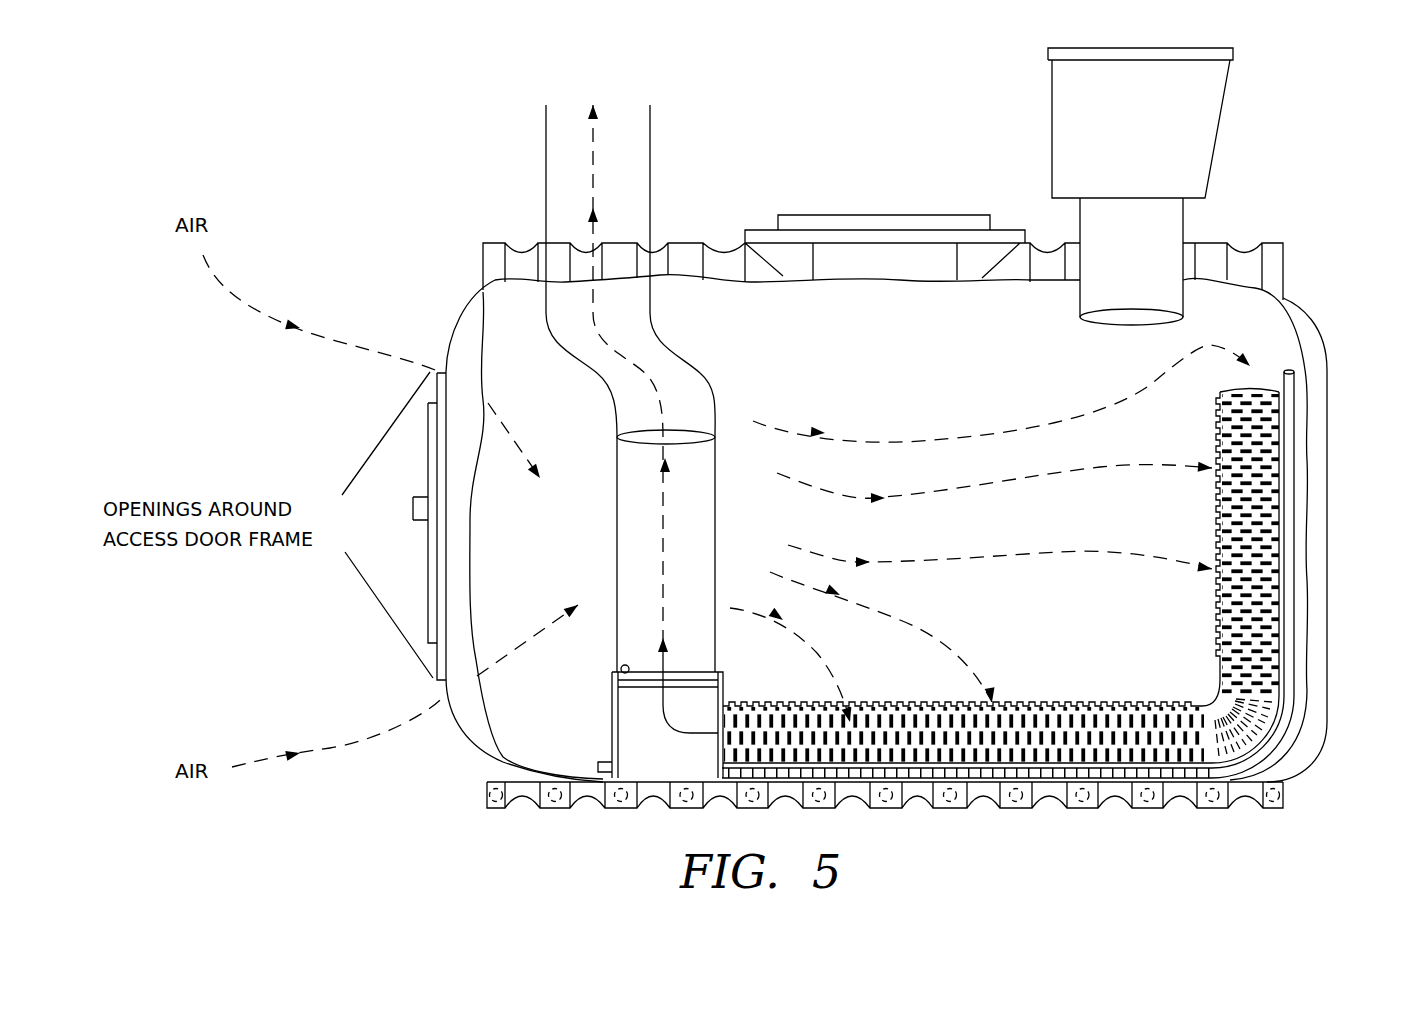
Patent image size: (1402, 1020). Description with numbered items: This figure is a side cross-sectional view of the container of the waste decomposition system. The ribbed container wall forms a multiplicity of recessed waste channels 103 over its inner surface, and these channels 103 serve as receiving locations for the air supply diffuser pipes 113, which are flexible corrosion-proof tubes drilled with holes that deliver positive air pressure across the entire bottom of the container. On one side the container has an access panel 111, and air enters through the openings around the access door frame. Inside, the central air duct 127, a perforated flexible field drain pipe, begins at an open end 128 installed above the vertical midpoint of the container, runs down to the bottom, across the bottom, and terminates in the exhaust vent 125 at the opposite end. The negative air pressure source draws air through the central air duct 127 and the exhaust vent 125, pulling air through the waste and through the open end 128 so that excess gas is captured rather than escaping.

The waste channels 103 is at (1003, 800).
The access panel 111 is at (432, 467).
The air supply diffuser pipes 113 is at (1150, 797).
The exhaust vent 125 is at (716, 497).
The central air duct 127 is at (1258, 553).
The open end 128 is at (1285, 378).